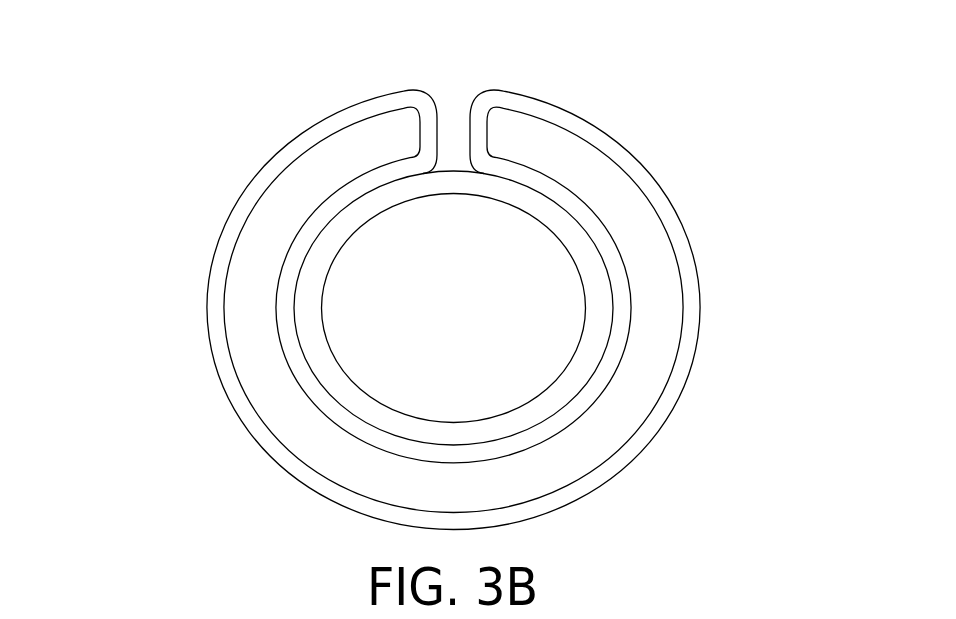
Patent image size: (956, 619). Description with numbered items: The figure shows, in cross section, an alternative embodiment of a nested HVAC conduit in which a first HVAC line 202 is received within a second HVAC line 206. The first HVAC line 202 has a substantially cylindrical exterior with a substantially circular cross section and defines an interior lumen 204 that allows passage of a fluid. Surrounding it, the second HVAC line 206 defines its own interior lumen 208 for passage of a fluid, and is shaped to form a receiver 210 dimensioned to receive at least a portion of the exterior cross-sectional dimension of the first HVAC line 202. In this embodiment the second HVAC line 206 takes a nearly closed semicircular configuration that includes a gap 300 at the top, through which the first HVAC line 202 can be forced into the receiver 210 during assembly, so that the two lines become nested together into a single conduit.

The gap 300 is at (447, 95).
The first HVAC line 202 is at (583, 305).
The interior lumen 204 is at (474, 321).
The second HVAC line 206 is at (217, 313).
The interior lumen 208 is at (250, 342).
The receiver 210 is at (355, 432).